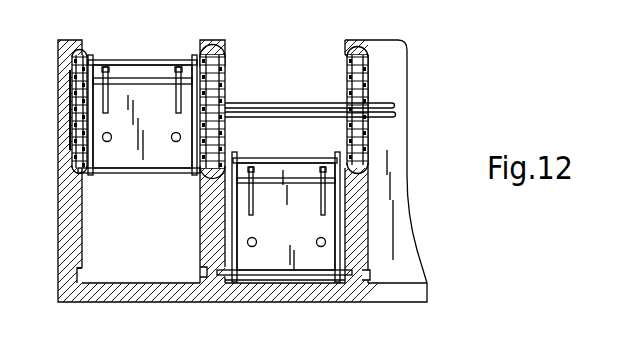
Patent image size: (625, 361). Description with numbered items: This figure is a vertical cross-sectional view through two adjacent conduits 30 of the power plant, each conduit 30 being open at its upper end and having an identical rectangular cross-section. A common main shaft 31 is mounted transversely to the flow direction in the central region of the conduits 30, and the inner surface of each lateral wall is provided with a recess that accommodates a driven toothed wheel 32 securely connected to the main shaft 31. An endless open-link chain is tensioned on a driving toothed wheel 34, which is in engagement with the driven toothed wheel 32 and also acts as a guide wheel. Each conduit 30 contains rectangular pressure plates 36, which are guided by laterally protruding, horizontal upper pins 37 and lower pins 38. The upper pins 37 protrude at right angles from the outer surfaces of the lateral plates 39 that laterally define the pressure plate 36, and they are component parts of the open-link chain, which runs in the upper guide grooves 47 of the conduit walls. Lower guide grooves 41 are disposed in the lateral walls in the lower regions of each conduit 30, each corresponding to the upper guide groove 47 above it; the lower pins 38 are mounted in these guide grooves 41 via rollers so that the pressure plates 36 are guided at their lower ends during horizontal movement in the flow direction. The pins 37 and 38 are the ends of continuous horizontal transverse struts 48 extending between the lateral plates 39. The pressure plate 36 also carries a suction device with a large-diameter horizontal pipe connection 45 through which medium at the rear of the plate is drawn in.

The conduit 30 is at (408, 232).
The main shaft 31 is at (385, 105).
The driven toothed wheel 32 is at (213, 85).
The driving toothed wheel 34 is at (65, 147).
The pressure plate 36 is at (152, 130).
The upper pin 37 is at (87, 57).
The lower pin 38 is at (83, 178).
The lateral plate 39 is at (185, 160).
The guide groove 41 is at (188, 275).
The pipe connection 45 is at (108, 142).
The upper guide groove 47 is at (223, 62).
The transverse strut 48 is at (147, 60).